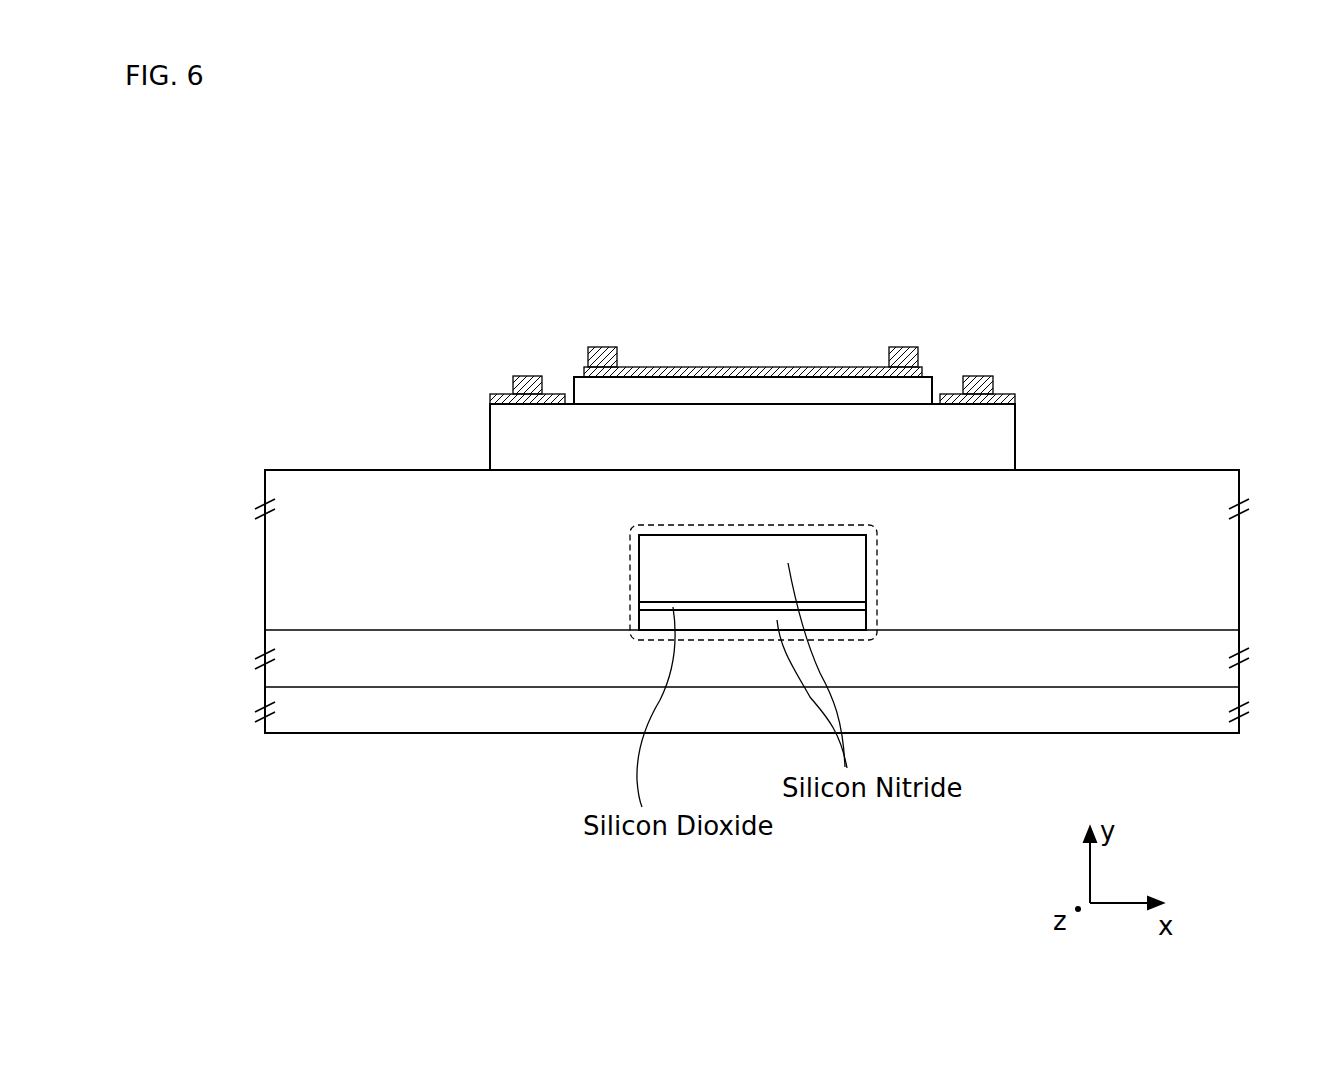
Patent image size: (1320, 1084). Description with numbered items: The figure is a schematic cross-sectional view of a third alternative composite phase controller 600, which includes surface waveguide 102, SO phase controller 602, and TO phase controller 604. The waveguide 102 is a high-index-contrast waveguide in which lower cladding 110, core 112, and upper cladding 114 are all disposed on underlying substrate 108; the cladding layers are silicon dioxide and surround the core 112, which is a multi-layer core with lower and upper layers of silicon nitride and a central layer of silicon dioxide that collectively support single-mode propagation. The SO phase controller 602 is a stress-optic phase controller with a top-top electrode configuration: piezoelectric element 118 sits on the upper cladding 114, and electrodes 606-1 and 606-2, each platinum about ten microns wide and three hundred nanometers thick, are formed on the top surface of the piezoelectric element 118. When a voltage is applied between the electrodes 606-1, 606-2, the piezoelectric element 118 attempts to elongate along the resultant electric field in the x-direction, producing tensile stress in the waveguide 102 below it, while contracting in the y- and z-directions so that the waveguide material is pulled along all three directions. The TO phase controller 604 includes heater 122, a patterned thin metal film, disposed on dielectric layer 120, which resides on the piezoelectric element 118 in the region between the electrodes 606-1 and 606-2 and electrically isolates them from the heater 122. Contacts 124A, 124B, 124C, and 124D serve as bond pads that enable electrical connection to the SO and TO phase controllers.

The composite phase controller 600 is at (343, 165).
The SO phase controller 602 is at (408, 396).
The TO phase controller 604 is at (525, 338).
The waveguide 102 is at (247, 470).
The substrate 108 is at (1193, 723).
The lower cladding 110 is at (1203, 673).
The core 112 is at (634, 610).
The upper cladding 114 is at (1213, 608).
The piezoelectric element 118 is at (752, 437).
The dielectric layer 120 is at (752, 390).
The heater 122 is at (925, 372).
The contact 124A is at (514, 382).
The contact 124B is at (996, 382).
The contact 124C is at (601, 347).
The contact 124D is at (903, 347).
The electrode 606-1 is at (490, 398).
The electrode 606-2 is at (1015, 398).